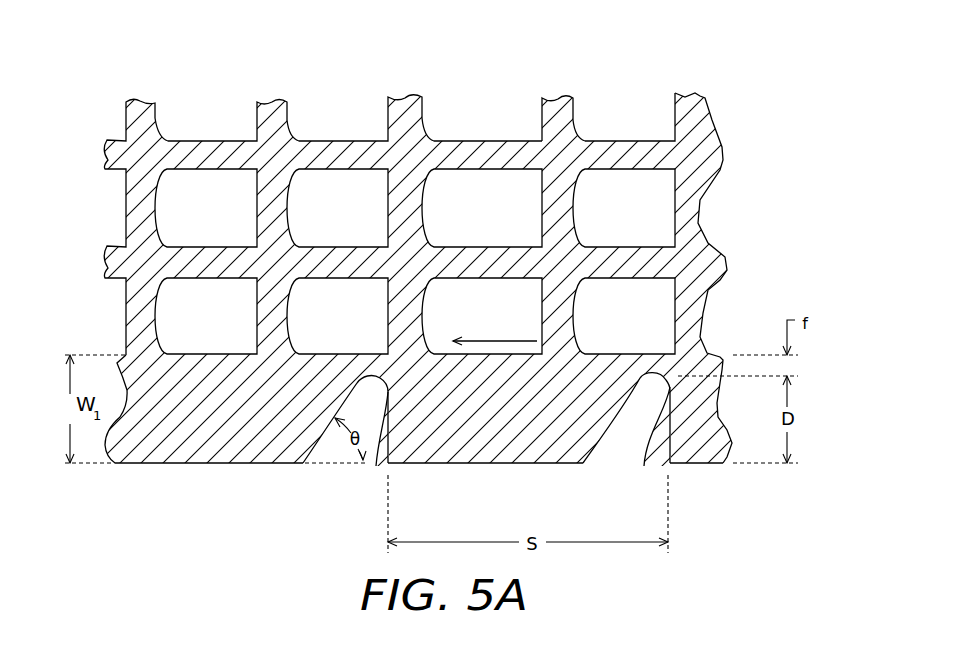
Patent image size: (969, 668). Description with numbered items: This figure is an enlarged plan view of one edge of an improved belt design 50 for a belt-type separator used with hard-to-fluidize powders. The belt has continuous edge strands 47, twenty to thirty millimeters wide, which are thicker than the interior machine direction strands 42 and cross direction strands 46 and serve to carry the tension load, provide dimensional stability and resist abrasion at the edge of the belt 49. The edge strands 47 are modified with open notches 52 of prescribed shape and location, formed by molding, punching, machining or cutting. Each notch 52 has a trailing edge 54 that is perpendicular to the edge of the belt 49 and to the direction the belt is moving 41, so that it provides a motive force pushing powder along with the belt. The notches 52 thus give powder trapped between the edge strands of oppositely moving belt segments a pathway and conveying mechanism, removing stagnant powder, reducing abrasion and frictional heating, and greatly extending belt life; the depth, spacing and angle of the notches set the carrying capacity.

The improved belt design 50 is at (620, 58).
The cross direction strands 46 is at (542, 225).
The machine direction strands 42 is at (651, 171).
The direction the belt is moving 41 is at (515, 340).
The edge strands 47 is at (720, 353).
The edge of the belt 49 is at (157, 465).
The notches 52 is at (327, 467).
The trailing edge 54 is at (376, 466).